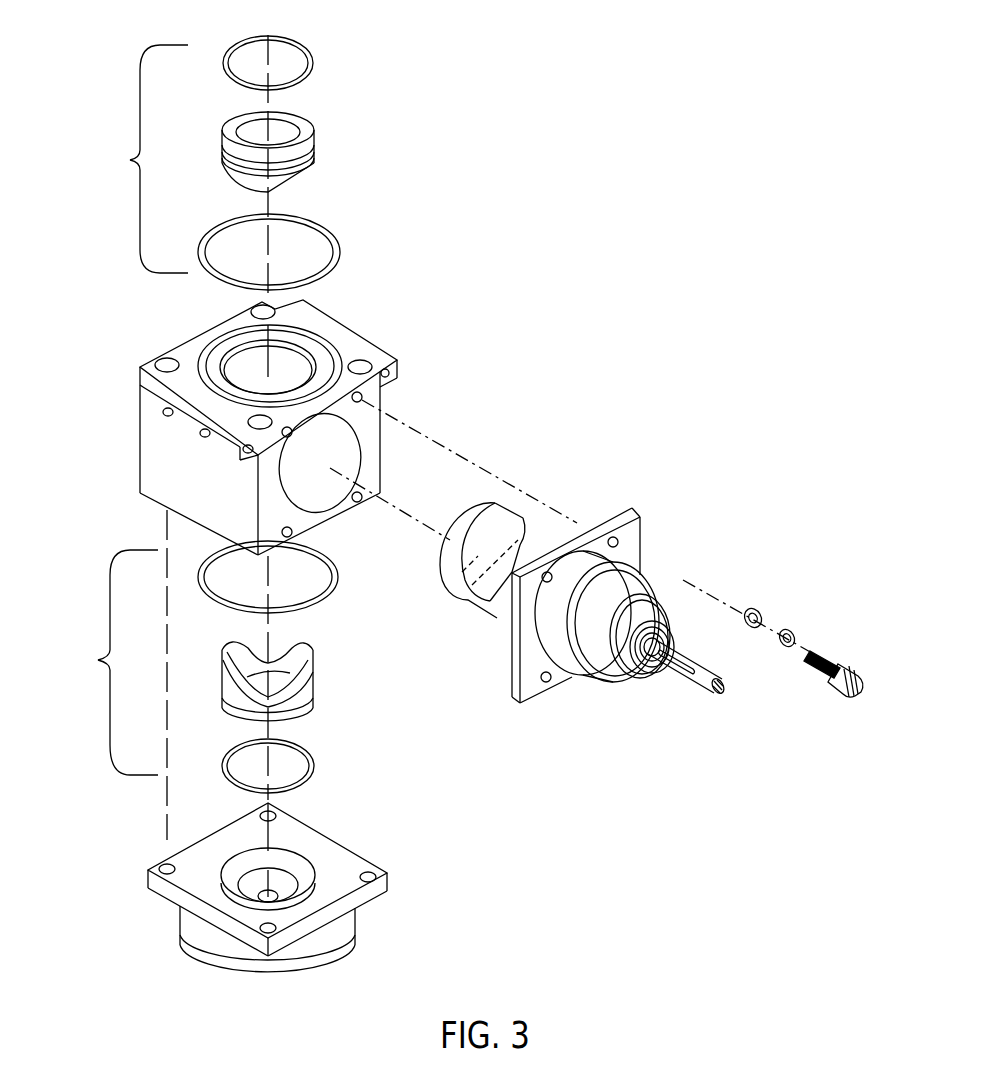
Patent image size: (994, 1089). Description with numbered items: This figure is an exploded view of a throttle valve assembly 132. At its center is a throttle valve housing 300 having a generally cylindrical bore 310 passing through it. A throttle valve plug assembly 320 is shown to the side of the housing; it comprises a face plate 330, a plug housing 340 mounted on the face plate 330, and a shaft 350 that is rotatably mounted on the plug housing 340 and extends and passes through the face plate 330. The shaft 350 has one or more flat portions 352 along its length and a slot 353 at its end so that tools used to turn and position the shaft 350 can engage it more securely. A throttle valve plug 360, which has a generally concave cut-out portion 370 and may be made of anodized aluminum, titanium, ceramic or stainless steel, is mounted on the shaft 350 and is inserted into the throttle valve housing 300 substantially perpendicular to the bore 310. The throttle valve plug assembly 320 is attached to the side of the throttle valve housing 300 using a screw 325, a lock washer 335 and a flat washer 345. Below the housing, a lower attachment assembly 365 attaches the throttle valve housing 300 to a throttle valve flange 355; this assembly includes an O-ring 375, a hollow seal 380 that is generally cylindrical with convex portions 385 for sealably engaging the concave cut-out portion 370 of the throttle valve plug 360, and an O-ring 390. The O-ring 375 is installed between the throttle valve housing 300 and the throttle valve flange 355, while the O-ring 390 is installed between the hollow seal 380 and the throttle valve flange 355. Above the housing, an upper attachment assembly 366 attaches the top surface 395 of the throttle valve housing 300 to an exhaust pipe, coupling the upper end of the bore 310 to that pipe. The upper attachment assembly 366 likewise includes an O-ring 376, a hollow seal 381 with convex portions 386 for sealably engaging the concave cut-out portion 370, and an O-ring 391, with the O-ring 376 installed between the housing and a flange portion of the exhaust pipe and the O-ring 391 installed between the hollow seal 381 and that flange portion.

The throttle valve assembly 132 is at (670, 201).
The throttle valve housing 300 is at (273, 426).
The bore 310 is at (313, 352).
The throttle valve plug assembly 320 is at (671, 615).
The screw 325 is at (853, 664).
The face plate 330 is at (607, 581).
The lock washer 335 is at (823, 623).
The plug housing 340 is at (640, 606).
The flat washer 345 is at (785, 595).
The shaft 350 is at (714, 682).
The flat portions 352 is at (711, 653).
The slot 353 is at (760, 704).
The throttle valve flange 355 is at (312, 887).
The throttle valve plug 360 is at (520, 543).
The lower attachment assembly 365 is at (92, 662).
The upper attachment assembly 366 is at (117, 159).
The concave cut-out portion 370 is at (484, 596).
The O-ring 375 is at (306, 577).
The O-ring 376 is at (315, 252).
The hollow seal 380 is at (321, 667).
The hollow seal 381 is at (314, 165).
The convex portions 385 is at (312, 657).
The convex portions 386 is at (278, 187).
The O-ring 390 is at (320, 767).
The O-ring 391 is at (310, 53).
The top surface 395 is at (156, 387).